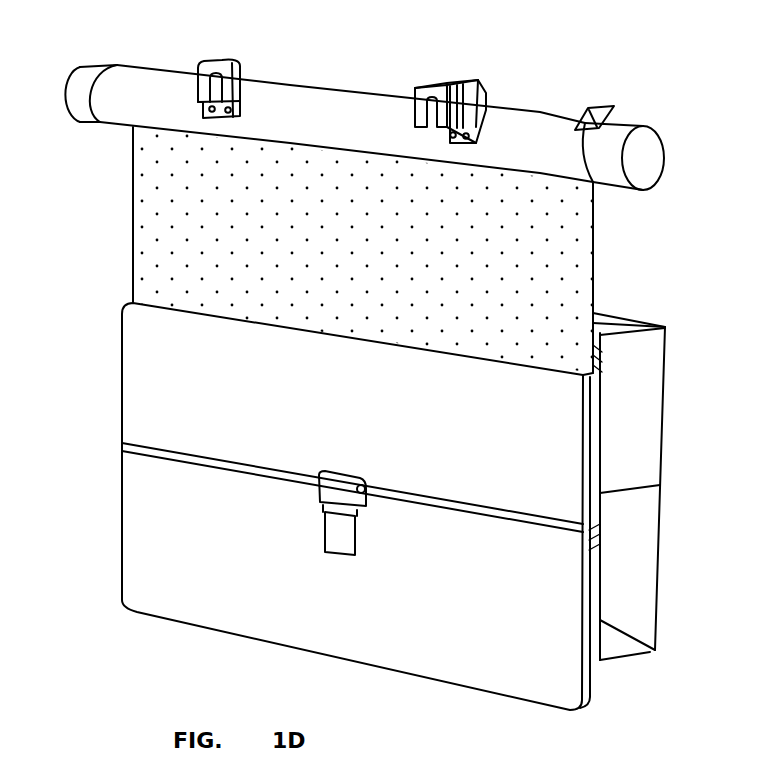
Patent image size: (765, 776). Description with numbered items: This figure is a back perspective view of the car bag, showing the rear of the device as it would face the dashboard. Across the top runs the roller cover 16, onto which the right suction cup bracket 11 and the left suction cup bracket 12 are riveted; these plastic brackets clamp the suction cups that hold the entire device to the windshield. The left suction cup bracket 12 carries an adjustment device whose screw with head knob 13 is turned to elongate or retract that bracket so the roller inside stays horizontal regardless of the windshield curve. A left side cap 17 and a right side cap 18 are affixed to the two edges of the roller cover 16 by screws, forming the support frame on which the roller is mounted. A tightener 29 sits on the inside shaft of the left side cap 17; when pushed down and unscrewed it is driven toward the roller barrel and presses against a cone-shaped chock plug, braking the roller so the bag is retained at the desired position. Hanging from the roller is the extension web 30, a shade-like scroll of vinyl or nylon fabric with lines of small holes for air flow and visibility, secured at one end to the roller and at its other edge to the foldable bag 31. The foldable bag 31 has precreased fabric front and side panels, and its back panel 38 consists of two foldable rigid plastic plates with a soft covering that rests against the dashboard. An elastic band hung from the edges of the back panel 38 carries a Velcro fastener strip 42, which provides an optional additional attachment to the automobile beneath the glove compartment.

The right suction cup bracket 11 is at (210, 67).
The left suction cup bracket 12 is at (442, 88).
The adjustment head knob with screw 13 is at (243, 75).
The roller cover 16 is at (537, 118).
The left side cap 17 is at (653, 152).
The right side cap 18 is at (83, 75).
The tightener 29 is at (595, 112).
The extension web 30 is at (578, 258).
The foldable bag 31 is at (647, 410).
The bag back panel 38 is at (137, 380).
The Velcro fastener strip 42 is at (330, 530).